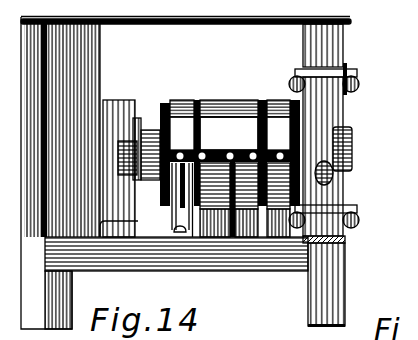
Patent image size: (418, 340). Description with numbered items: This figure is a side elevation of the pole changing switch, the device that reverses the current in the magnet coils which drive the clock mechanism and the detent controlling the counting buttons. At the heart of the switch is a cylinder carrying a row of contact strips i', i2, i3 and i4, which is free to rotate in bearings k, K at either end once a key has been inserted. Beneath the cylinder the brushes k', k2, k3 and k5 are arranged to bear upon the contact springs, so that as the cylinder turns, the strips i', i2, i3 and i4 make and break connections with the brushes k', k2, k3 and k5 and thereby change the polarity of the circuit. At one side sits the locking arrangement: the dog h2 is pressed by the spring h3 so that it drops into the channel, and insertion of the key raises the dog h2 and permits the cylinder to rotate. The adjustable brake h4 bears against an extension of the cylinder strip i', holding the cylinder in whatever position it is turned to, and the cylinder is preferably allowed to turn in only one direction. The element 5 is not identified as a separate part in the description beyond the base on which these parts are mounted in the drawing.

The bearing k is at (135, 159).
The contact strip i' is at (183, 108).
The contact strip i2 is at (216, 100).
The contact strip i3 is at (272, 98).
The contact strip i4 is at (229, 133).
The dog h2 is at (352, 127).
The spring h3 is at (325, 97).
The adjustable brake h4 is at (334, 176).
The bearing K is at (305, 213).
The brush k5 is at (181, 237).
The brush k3 is at (220, 237).
The brush k2 is at (253, 237).
The brush k' is at (282, 235).
The base plate 5 is at (262, 328).